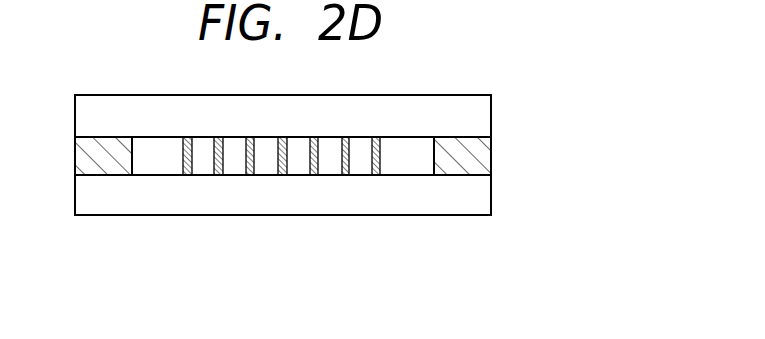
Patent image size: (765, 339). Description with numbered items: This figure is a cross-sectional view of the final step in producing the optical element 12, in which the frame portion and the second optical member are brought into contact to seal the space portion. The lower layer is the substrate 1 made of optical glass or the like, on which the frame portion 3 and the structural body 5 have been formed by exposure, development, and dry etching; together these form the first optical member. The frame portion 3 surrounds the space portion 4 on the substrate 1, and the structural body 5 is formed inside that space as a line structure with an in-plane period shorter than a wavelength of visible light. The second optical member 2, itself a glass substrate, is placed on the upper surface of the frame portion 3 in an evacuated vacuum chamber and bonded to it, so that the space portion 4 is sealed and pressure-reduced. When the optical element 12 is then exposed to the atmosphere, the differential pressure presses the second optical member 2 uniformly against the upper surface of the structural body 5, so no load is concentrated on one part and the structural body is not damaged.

The optical element 12 is at (468, 78).
The second optical member 2 is at (478, 115).
The frame portion 3 is at (478, 163).
The substrate 1 is at (478, 200).
The space portion 4 is at (160, 163).
The structural body 5 is at (342, 177).